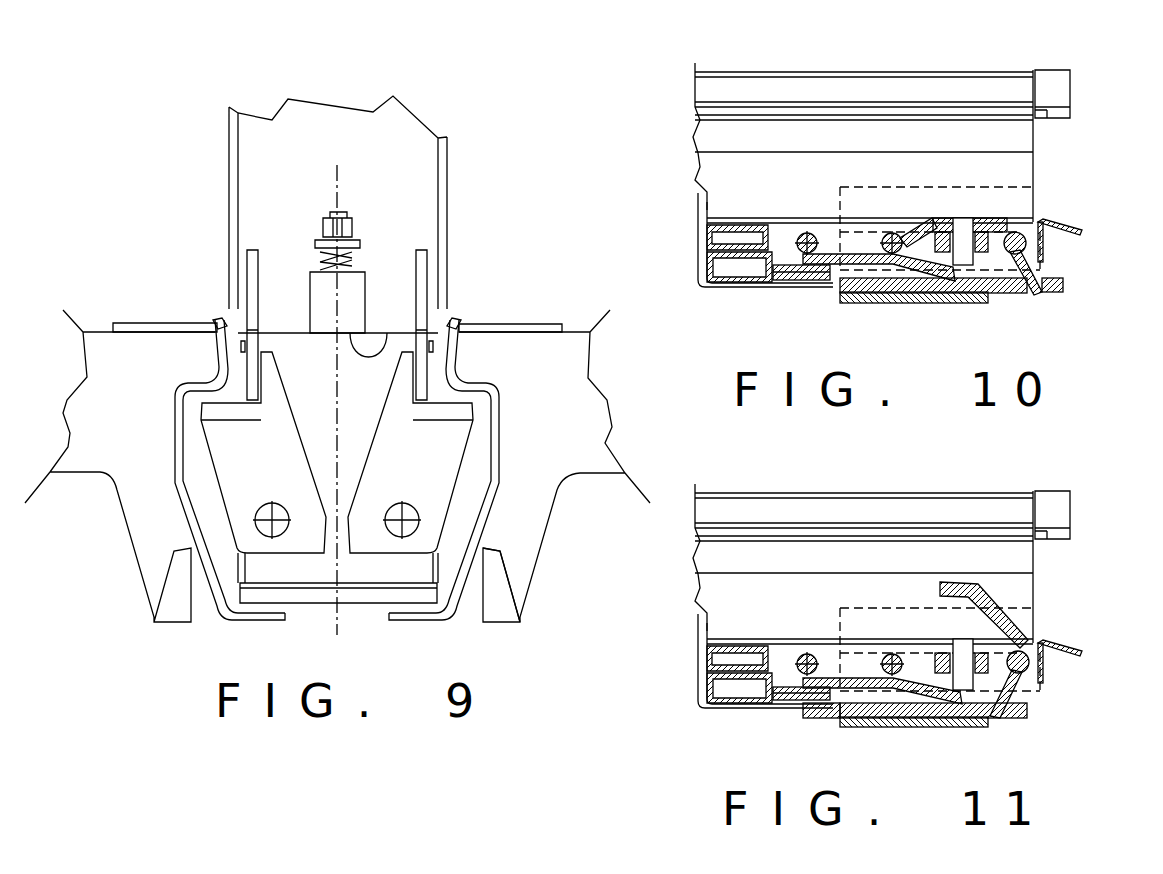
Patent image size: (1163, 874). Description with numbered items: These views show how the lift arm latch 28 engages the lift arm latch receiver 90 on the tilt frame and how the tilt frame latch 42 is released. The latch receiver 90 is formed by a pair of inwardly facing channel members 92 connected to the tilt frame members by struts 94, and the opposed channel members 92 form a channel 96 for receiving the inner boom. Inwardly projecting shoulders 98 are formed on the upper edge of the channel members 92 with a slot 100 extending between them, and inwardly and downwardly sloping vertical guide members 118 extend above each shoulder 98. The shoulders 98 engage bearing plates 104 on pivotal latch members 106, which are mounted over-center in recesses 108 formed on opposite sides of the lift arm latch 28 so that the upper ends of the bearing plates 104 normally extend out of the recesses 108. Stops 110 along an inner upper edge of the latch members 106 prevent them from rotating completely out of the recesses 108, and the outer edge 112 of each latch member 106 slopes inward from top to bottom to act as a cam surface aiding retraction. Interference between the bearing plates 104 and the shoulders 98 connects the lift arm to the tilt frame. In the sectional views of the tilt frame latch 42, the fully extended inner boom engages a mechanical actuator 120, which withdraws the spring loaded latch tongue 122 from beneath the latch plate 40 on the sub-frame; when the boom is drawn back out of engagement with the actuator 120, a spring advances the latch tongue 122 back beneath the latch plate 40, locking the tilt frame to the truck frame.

In FIG. 9, the lift arm latch 28 is at (341, 623).
In FIG. 10, the latch plate 40 is at (803, 282).
In FIG. 11, the latch plate 40 is at (803, 696).
In FIG. 10, the tilt frame latch 42 is at (945, 303).
In FIG. 11, the tilt frame latch 42 is at (1035, 764).
In FIG. 9, the lift arm latch receiver 90 is at (222, 306).
In FIG. 10, the lift arm latch receiver 90 is at (812, 76).
In FIG. 11, the lift arm latch receiver 90 is at (881, 540).
In FIG. 9, the channel members 92 is at (183, 595).
In FIG. 9, the struts 94 is at (594, 402).
In FIG. 9, the channel 96 is at (448, 568).
In FIG. 9, the shoulders 98 is at (193, 402).
In FIG. 9, the slot 100 is at (448, 318).
In FIG. 9, the bearing plates 104 is at (233, 415).
In FIG. 9, the pivotal latch members 106 is at (300, 493).
In FIG. 9, the recesses 108 is at (387, 325).
In FIG. 9, the stops 110 is at (270, 384).
In FIG. 9, the outer edge 112 is at (226, 505).
In FIG. 9, the vertical guide members 118 is at (214, 322).
In FIG. 10, the mechanical actuator 120 is at (990, 218).
In FIG. 11, the mechanical actuator 120 is at (1040, 650).
In FIG. 10, the latch tongue 122 is at (1012, 294).
In FIG. 11, the latch tongue 122 is at (873, 740).